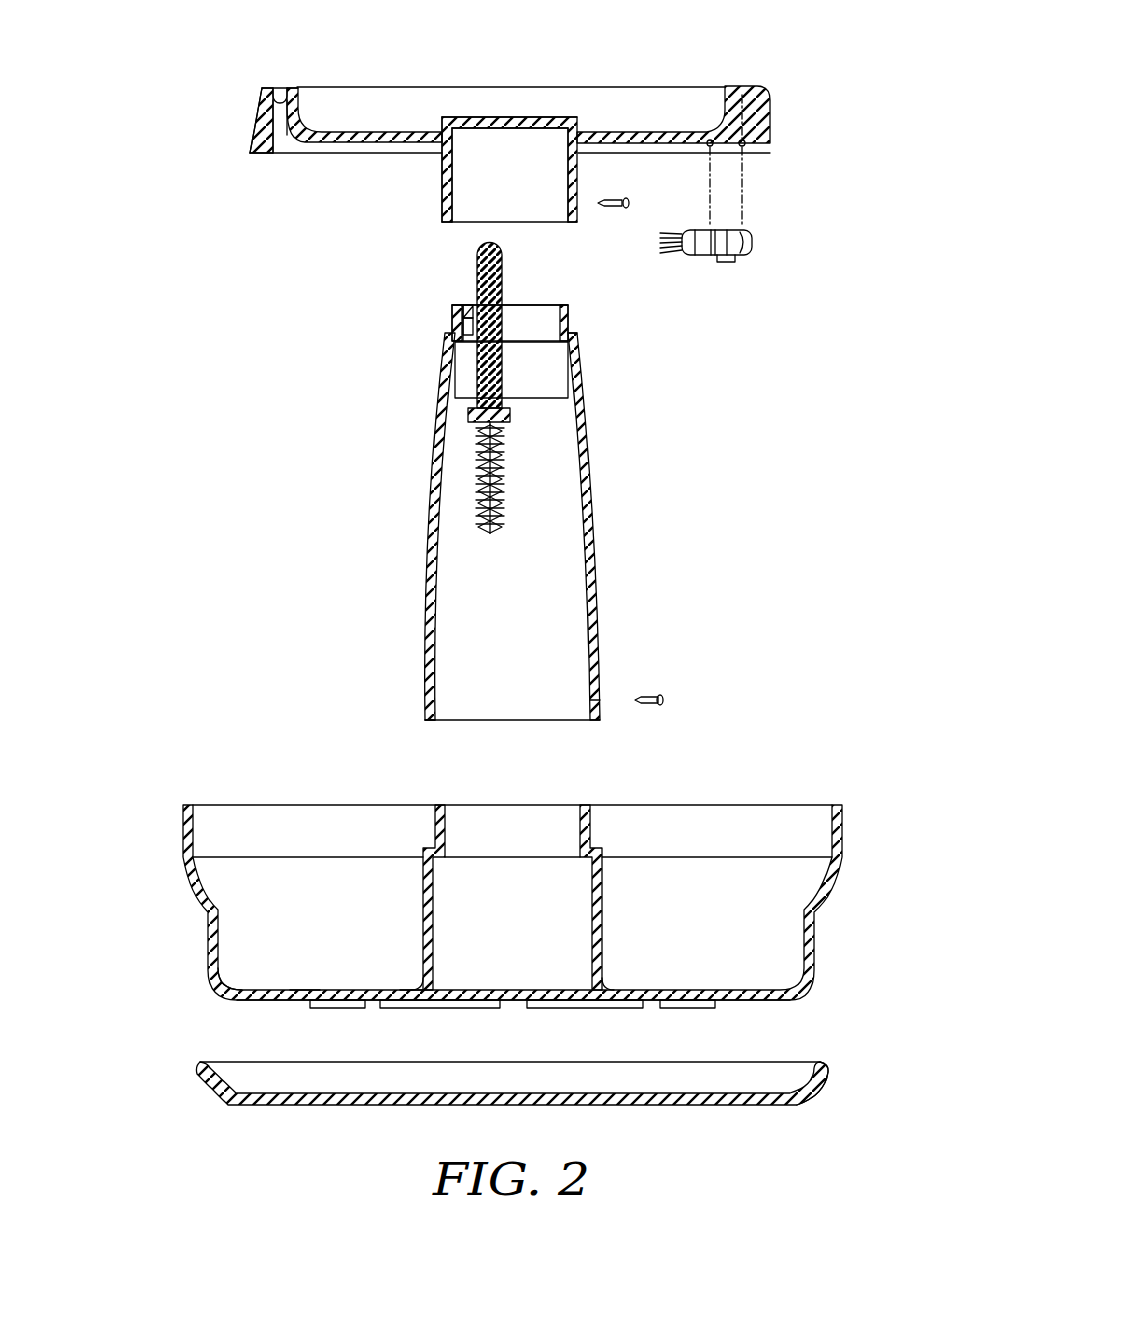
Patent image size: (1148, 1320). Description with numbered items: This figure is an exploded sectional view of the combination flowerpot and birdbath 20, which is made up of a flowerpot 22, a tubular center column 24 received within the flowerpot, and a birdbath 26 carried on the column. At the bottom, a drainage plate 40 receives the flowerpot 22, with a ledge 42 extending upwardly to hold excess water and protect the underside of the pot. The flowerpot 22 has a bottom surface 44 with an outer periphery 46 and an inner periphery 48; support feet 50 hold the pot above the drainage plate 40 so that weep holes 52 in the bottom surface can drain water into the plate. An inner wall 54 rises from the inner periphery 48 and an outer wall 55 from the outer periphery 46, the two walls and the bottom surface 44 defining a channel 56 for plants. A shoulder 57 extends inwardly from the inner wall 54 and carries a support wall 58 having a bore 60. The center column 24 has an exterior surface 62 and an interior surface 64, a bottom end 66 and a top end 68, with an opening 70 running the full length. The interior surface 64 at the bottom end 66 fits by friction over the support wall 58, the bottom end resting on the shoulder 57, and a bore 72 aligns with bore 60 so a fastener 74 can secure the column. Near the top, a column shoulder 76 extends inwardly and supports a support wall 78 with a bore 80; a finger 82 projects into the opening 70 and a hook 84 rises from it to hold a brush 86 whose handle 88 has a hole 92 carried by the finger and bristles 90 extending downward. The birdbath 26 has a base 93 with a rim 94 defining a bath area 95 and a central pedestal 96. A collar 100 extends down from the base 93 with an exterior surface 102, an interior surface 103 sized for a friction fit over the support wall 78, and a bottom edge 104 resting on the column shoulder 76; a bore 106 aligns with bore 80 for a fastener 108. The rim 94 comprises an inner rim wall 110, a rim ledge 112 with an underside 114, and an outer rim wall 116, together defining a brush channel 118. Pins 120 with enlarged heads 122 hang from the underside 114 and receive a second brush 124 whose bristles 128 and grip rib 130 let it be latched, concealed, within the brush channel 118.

The combination flowerpot and birdbath 20 is at (188, 506).
The flowerpot 22 is at (848, 770).
The center column 24 is at (618, 518).
The birdbath 26 is at (815, 90).
The drainage plate 40 is at (750, 1112).
The ledge 42 is at (827, 1072).
The bottom surface 44 is at (757, 1002).
The outer periphery 46 is at (222, 982).
The inner periphery 48 is at (418, 973).
The support feet 50 is at (568, 1008).
The weep holes 52 is at (305, 992).
The inner wall 54 is at (435, 908).
The outer wall 55 is at (840, 827).
The channel 56 is at (270, 828).
The shoulder 57 is at (596, 842).
The support wall 58 is at (445, 822).
The bore 60 is at (592, 845).
The exterior surface 62 is at (598, 566).
The interior surface 64 is at (436, 637).
The bottom end 66 is at (430, 722).
The top end 68 is at (455, 307).
The opening 70 is at (537, 315).
The bore 72 is at (600, 700).
The fastener 74 is at (665, 697).
The column shoulder 76 is at (583, 330).
The support wall 78 is at (452, 318).
The bore 80 is at (580, 300).
The finger 82 is at (465, 325).
The hook 84 is at (574, 365).
The brush 86 is at (512, 381).
The handle 88 is at (502, 282).
The bristles 90 is at (467, 517).
The hole 92 is at (578, 405).
The base 93 is at (332, 143).
The rim 94 is at (288, 83).
The bath area 95 is at (630, 108).
The pedestal 96 is at (465, 118).
The collar 100 is at (438, 187).
The exterior surface 102 is at (442, 207).
The interior surface 103 is at (455, 160).
The bottom edge 104 is at (442, 222).
The bore 106 is at (567, 205).
The fastener 108 is at (598, 205).
The inner rim wall 110 is at (300, 110).
The rim ledge 112 is at (273, 87).
The underside 114 is at (288, 145).
The outer rim wall 116 is at (258, 107).
The brush channel 118 is at (288, 158).
The pins 120 is at (752, 128).
The head 122 is at (745, 152).
The brush 124 is at (762, 242).
The bristles 128 is at (676, 237).
The grip rib 130 is at (728, 262).